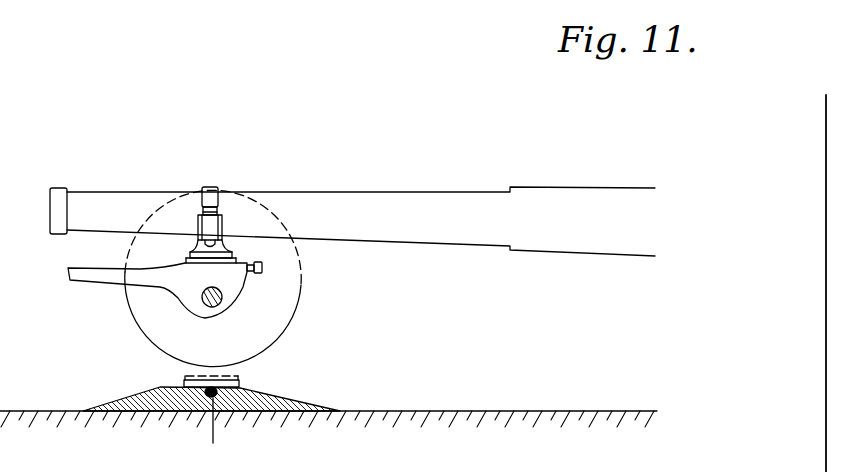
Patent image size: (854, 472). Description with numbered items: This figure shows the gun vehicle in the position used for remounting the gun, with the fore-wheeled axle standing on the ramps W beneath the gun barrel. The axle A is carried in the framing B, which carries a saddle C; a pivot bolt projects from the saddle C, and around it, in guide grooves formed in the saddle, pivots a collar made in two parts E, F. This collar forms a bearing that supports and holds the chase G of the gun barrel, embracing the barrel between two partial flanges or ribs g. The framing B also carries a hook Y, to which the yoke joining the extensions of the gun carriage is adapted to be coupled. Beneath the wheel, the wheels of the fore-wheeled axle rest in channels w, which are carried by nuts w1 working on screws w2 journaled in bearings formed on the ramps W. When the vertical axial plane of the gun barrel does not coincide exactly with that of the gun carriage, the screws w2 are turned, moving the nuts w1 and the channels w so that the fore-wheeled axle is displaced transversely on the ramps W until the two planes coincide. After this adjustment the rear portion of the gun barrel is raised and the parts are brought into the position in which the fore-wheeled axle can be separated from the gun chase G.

The chase of the gun barrel G is at (133, 203).
The partial flanges or ribs g is at (198, 222).
The collar part F is at (210, 197).
The collar part E is at (221, 253).
The saddle C is at (188, 262).
The hook Y is at (263, 270).
The framing B is at (237, 294).
The axle A is at (206, 305).
The ramps W is at (300, 403).
The channels w is at (234, 378).
The nuts w1 is at (328, 425).
The screws w2 is at (225, 430).